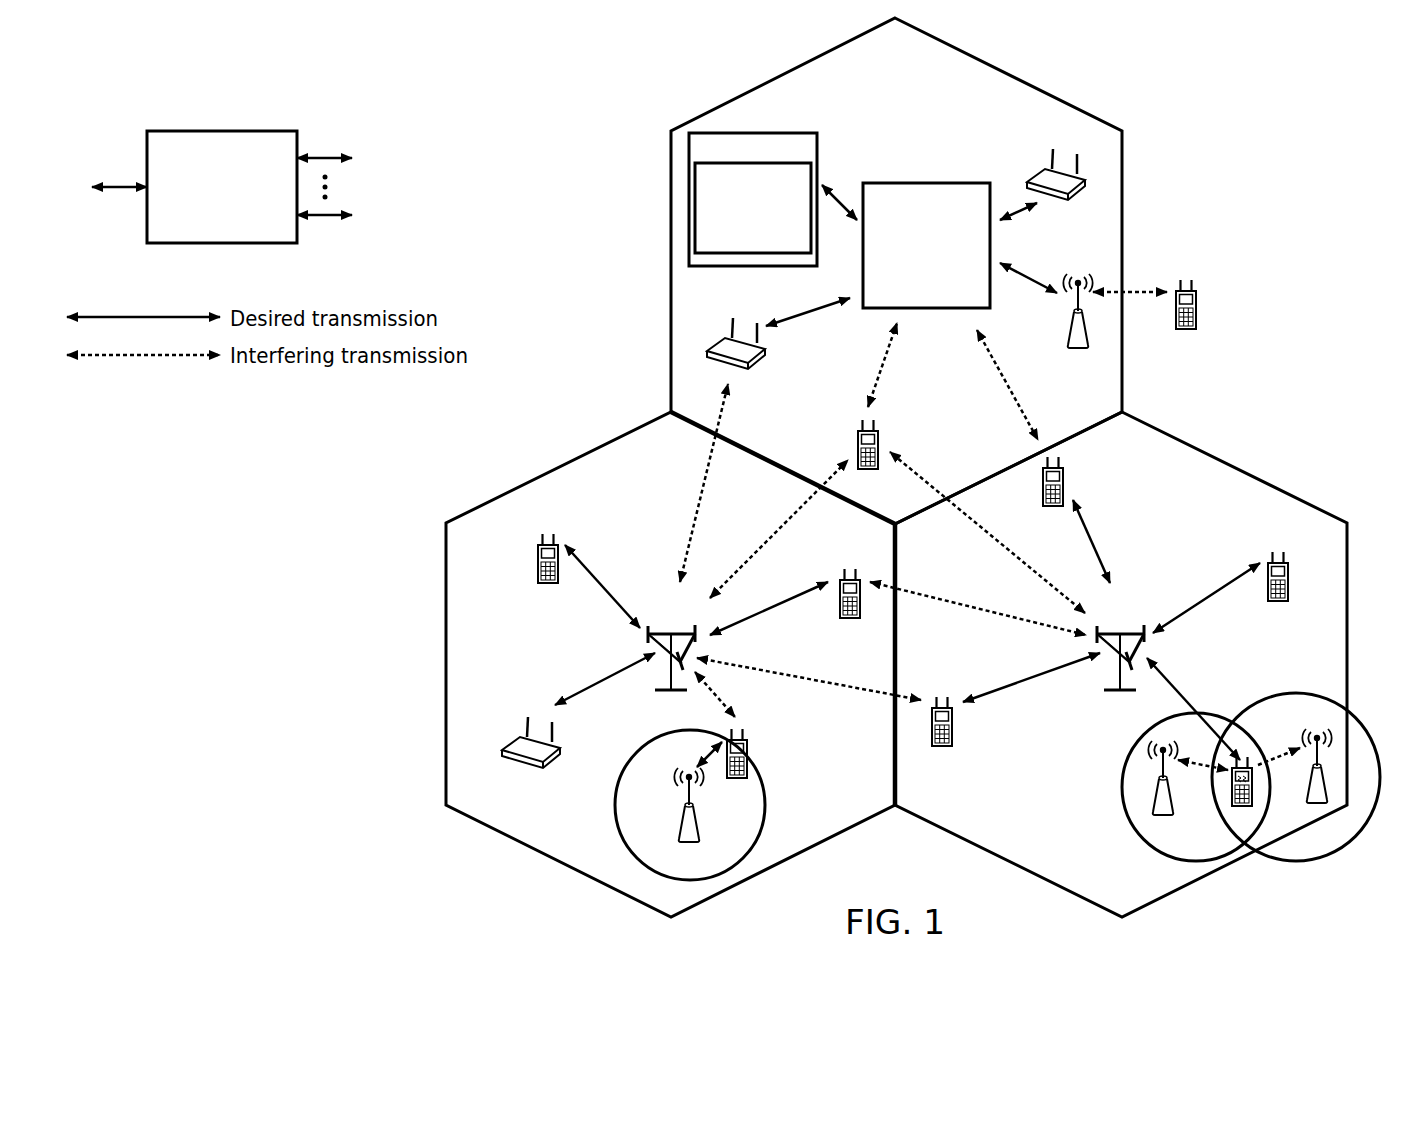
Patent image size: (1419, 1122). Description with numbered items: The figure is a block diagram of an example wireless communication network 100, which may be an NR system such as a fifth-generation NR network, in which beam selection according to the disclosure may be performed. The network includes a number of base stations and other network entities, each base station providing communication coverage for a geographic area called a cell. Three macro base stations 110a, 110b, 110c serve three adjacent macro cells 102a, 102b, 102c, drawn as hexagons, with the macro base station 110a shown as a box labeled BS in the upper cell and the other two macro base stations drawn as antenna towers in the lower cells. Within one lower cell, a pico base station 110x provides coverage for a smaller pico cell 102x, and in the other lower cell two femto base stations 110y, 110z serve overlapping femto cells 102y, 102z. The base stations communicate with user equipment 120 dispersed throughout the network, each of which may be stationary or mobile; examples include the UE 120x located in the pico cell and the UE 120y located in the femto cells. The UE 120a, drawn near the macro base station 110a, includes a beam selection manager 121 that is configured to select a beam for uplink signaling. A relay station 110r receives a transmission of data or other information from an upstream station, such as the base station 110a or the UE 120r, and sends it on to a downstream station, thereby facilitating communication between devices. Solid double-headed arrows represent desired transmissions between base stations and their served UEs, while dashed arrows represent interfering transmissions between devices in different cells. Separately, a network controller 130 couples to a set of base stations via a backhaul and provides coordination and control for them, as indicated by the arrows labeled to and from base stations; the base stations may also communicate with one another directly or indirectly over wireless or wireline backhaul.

The wireless communication network 100 is at (1272, 89).
The network controller 130 is at (217, 131).
The macro cell 102a is at (1008, 72).
The macro cell 102b is at (558, 465).
The macro cell 102c is at (1233, 467).
The pico cell 102x is at (640, 748).
The femto cell 102y is at (1128, 750).
The femto cell 102z is at (1293, 690).
The macro base station 110a is at (957, 182).
The macro base station 110b is at (670, 632).
The macro base station 110c is at (1119, 632).
The relay station 110r is at (1066, 323).
The pico base station 110x is at (700, 828).
The femto base station 110y is at (1173, 800).
The femto base station 110z is at (1327, 788).
The user equipment 120 is at (722, 340).
The user equipment 120a is at (771, 188).
The user equipment 120r is at (1197, 328).
The user equipment 120x is at (748, 743).
The user equipment 120y is at (1232, 808).
The beam selection manager 121 is at (811, 230).